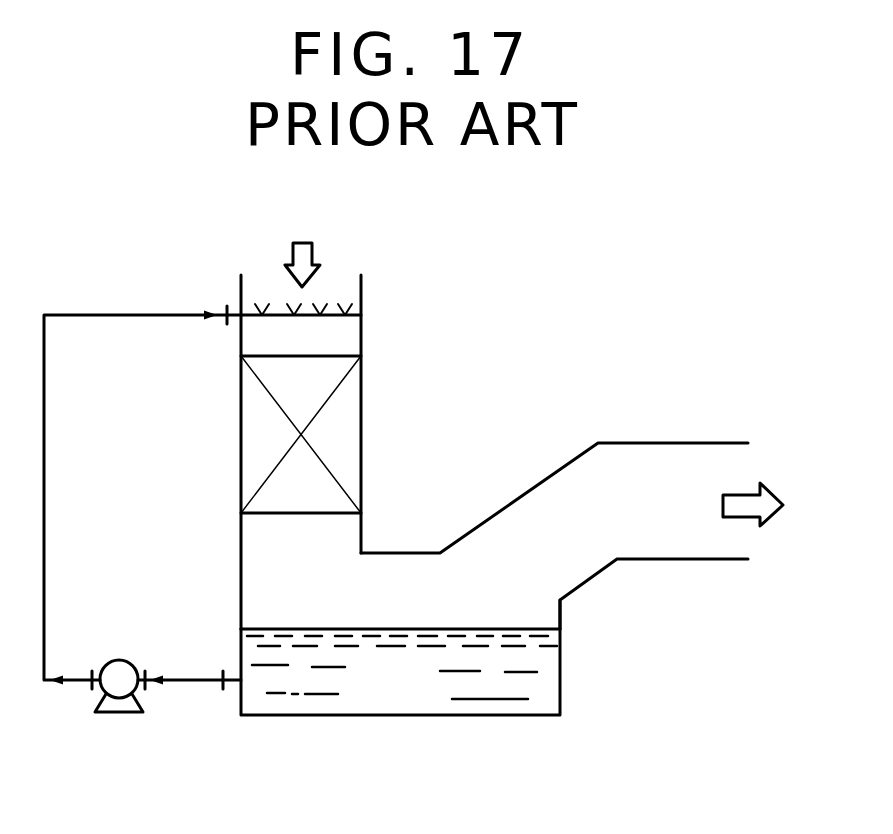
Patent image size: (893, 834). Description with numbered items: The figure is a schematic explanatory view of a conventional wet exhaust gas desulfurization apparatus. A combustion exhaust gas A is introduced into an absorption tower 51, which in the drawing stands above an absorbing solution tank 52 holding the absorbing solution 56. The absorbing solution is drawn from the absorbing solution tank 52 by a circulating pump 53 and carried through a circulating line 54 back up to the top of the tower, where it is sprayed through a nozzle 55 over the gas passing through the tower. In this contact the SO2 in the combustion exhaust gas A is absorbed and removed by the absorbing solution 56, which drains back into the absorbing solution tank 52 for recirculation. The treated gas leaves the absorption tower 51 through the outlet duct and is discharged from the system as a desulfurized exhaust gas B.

The absorption tower 51 is at (363, 329).
The absorbing solution tank 52 is at (562, 672).
The circulating pump 53 is at (118, 716).
The circulating line 54 is at (92, 312).
The nozzle 55 is at (297, 307).
The absorbing solution 56 is at (402, 669).
The combustion exhaust gas A is at (315, 251).
The desulfurized exhaust gas B is at (735, 493).